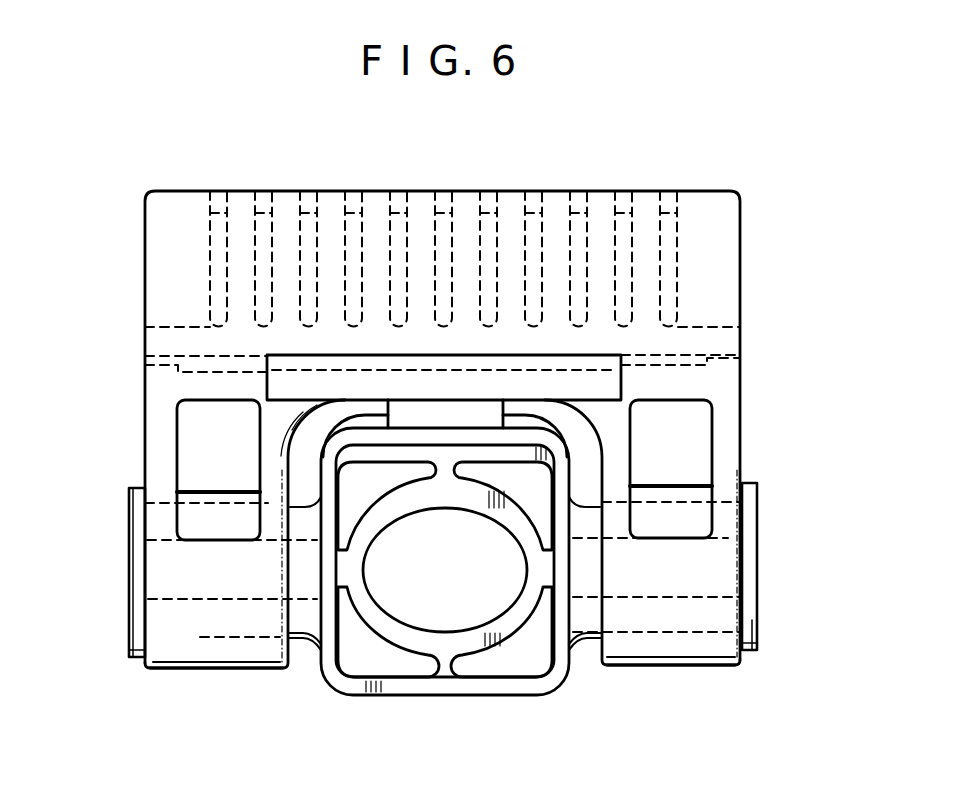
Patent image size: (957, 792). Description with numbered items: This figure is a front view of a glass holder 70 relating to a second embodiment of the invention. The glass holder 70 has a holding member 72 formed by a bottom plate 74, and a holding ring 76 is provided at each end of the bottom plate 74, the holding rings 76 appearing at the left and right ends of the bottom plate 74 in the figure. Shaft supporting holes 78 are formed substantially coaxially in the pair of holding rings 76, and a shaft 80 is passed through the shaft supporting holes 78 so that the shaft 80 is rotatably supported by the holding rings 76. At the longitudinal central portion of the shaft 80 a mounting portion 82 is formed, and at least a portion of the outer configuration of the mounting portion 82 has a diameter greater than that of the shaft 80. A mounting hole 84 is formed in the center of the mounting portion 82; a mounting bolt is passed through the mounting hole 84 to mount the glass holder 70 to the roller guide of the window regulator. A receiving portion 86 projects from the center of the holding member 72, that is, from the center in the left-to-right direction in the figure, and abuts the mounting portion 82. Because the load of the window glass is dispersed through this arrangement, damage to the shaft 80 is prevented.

The glass holder 70 is at (757, 294).
The holding member 72 is at (740, 229).
The bottom plate 74 is at (168, 327).
The holding ring 76 is at (142, 671).
The shaft supporting hole 78 is at (183, 637).
The shaft 80 is at (755, 557).
The mounting portion 82 is at (549, 684).
The mounting hole 84 is at (422, 620).
The receiving portion 86 is at (287, 437).